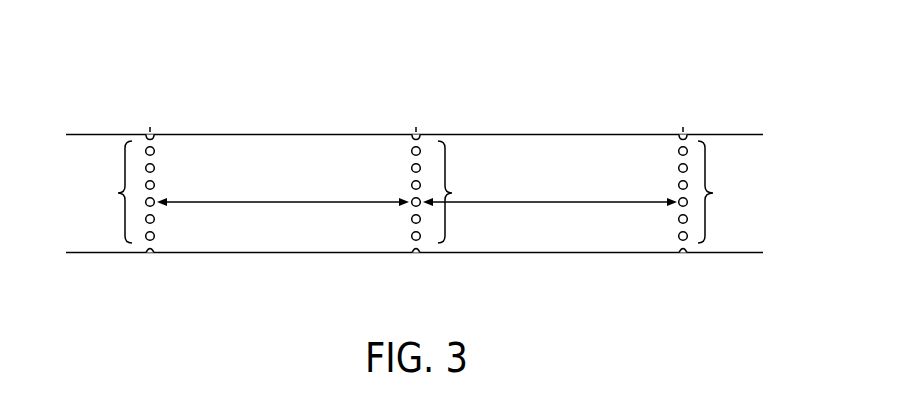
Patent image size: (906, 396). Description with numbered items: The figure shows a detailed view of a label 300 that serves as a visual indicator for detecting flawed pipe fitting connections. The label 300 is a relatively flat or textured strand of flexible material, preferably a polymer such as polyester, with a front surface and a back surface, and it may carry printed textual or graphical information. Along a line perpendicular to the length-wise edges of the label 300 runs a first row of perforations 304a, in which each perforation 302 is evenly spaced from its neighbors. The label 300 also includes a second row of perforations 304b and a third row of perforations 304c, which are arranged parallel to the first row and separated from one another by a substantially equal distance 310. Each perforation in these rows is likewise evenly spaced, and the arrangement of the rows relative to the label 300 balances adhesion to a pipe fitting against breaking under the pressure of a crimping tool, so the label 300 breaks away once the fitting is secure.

The label 300 is at (103, 40).
The perforation 302 is at (156, 165).
The first row of perforations 304a is at (141, 189).
The second row of perforations 304b is at (447, 232).
The third row of perforations 304c is at (707, 232).
The substantially equal distance 310 is at (322, 202).